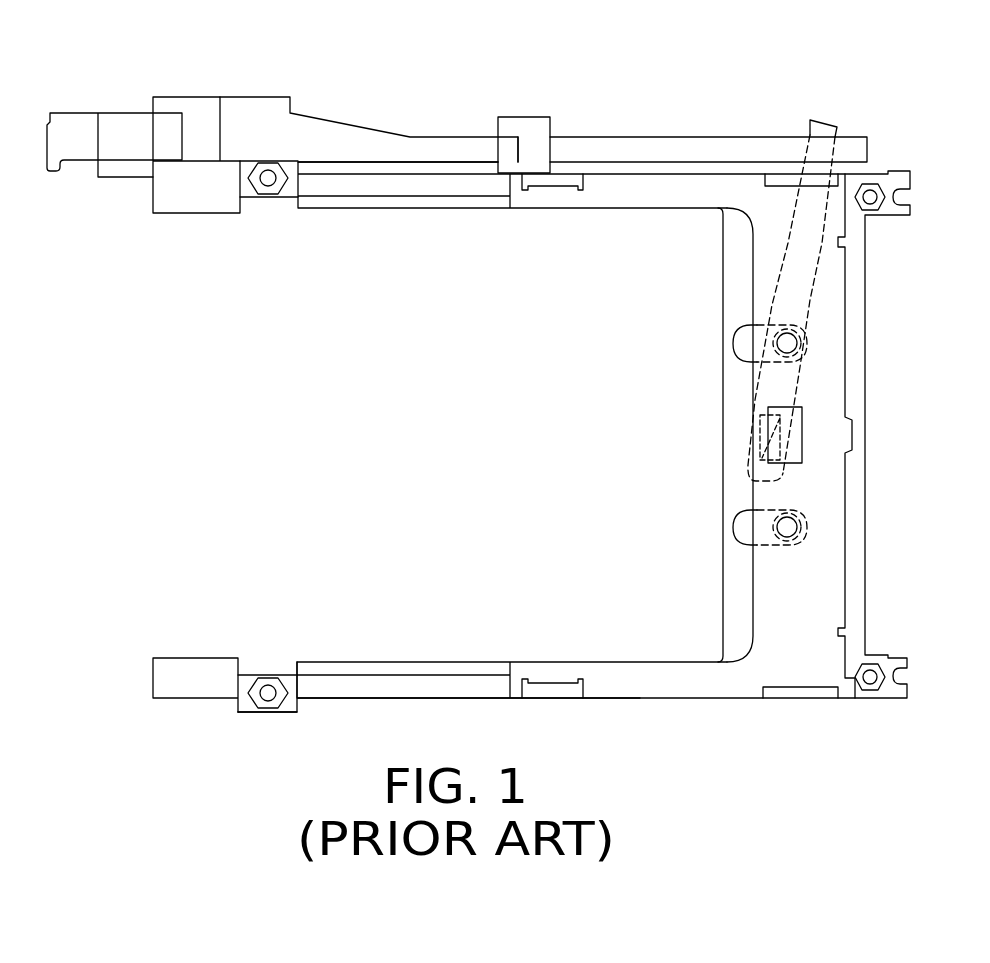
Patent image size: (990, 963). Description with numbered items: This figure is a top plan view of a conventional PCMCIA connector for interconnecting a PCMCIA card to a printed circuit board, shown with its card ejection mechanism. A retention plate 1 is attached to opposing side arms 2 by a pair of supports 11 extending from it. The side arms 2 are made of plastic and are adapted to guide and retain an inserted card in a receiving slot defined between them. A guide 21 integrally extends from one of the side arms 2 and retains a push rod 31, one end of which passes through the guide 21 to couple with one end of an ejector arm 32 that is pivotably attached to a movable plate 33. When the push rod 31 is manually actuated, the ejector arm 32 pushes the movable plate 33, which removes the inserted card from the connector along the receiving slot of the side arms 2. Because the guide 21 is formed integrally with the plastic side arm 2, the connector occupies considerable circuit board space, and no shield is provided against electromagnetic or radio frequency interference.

The retention plate 1 is at (828, 487).
The side arm 2 is at (383, 190).
The support 11 is at (640, 685).
The guide 21 is at (198, 110).
The push rod 31 is at (312, 135).
The ejector arm 32 is at (790, 262).
The movable plate 33 is at (737, 398).